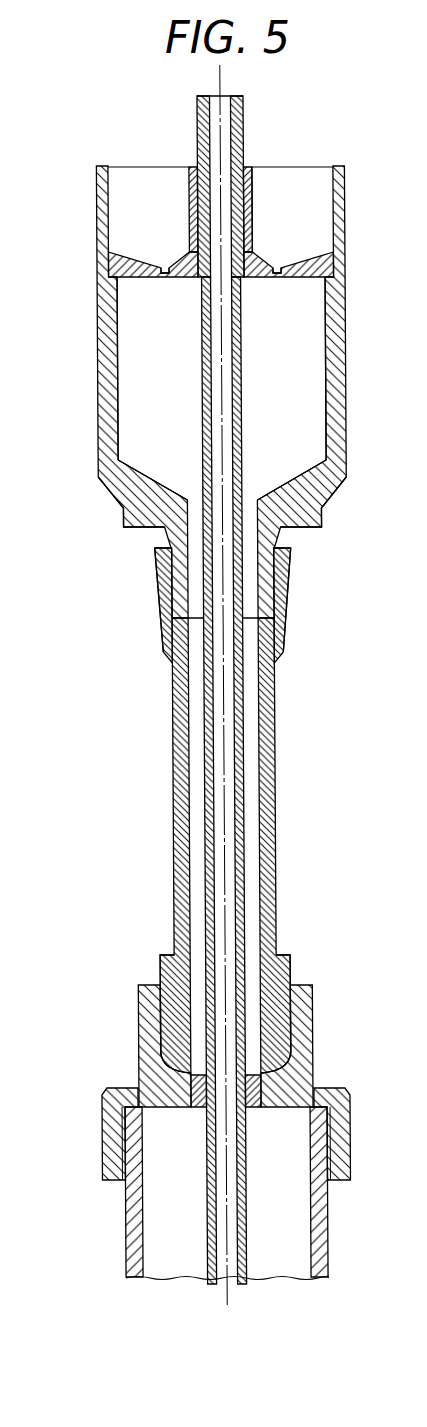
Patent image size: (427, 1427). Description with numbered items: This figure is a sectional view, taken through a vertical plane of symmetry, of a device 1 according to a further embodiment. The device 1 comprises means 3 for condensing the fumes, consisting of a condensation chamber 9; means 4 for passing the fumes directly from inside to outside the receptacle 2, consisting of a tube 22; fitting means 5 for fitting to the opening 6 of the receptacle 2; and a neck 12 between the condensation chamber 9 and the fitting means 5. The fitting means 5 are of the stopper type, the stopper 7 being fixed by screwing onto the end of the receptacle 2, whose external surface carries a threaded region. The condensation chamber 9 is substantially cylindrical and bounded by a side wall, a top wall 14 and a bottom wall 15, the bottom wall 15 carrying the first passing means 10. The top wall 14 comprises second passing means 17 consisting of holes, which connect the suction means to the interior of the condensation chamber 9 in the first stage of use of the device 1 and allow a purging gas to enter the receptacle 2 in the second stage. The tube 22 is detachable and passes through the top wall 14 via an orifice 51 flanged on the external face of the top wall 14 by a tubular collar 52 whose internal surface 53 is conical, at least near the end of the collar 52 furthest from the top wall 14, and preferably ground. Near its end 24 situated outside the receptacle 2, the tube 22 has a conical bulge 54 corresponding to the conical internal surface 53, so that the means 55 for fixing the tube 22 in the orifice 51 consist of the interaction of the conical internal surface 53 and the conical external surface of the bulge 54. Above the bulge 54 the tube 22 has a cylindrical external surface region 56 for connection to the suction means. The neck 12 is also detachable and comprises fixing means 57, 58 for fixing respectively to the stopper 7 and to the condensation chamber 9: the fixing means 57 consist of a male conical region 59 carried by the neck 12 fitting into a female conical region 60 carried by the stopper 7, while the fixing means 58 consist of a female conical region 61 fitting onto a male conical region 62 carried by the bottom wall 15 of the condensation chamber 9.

The device 1 is at (362, 219).
The receptacle 2 is at (329, 1252).
The means for condensing the fumes 3 is at (352, 400).
The means for passing the fumes 4 is at (252, 712).
The fitting means 5 is at (95, 1090).
The opening 6 is at (293, 1112).
The stopper 7 is at (352, 1168).
The condensation chamber 9 is at (127, 352).
The first passing means 10 is at (178, 487).
The neck 12 is at (276, 825).
The top wall 14 is at (330, 270).
The bottom wall 15 is at (137, 517).
The second passing means 17 is at (162, 266).
The tube 22 is at (220, 779).
The end 24 is at (199, 129).
The orifice 51 is at (255, 235).
The tubular collar 52 is at (249, 209).
The internal surface 53 is at (256, 182).
The bulge 54 is at (243, 114).
The means for fixing the tube 55 is at (186, 151).
The cylindrical external surface region 56 is at (197, 104).
The fixing means 57 is at (322, 985).
The fixing means 58 is at (297, 579).
The male conical region 59 is at (291, 963).
The female conical region 60 is at (312, 1012).
The female conical region 61 is at (275, 602).
The male conical region 62 is at (280, 542).